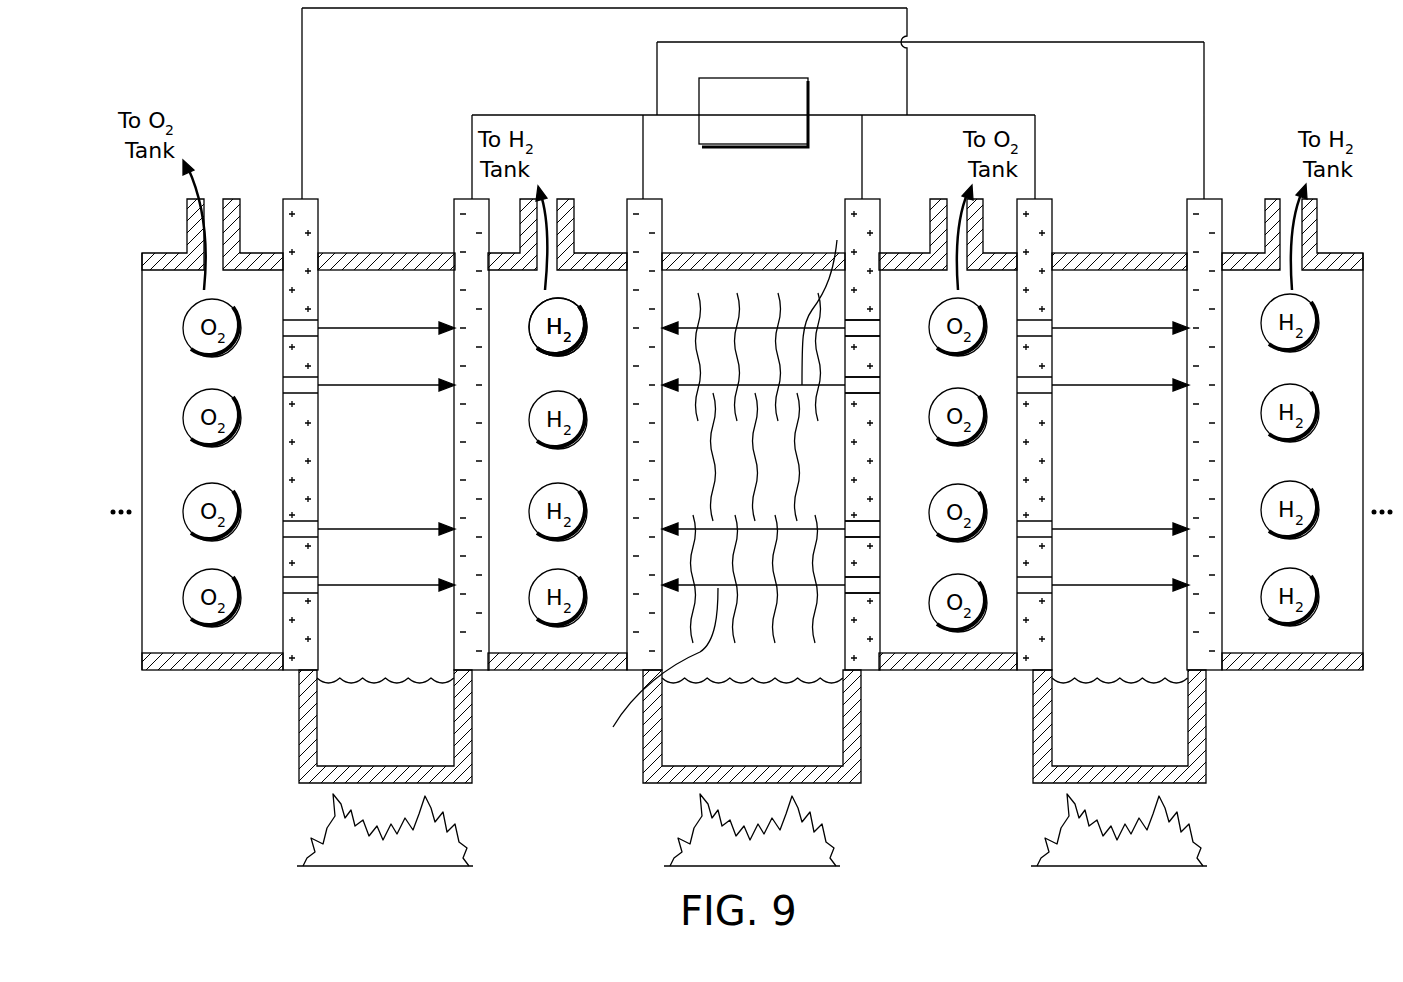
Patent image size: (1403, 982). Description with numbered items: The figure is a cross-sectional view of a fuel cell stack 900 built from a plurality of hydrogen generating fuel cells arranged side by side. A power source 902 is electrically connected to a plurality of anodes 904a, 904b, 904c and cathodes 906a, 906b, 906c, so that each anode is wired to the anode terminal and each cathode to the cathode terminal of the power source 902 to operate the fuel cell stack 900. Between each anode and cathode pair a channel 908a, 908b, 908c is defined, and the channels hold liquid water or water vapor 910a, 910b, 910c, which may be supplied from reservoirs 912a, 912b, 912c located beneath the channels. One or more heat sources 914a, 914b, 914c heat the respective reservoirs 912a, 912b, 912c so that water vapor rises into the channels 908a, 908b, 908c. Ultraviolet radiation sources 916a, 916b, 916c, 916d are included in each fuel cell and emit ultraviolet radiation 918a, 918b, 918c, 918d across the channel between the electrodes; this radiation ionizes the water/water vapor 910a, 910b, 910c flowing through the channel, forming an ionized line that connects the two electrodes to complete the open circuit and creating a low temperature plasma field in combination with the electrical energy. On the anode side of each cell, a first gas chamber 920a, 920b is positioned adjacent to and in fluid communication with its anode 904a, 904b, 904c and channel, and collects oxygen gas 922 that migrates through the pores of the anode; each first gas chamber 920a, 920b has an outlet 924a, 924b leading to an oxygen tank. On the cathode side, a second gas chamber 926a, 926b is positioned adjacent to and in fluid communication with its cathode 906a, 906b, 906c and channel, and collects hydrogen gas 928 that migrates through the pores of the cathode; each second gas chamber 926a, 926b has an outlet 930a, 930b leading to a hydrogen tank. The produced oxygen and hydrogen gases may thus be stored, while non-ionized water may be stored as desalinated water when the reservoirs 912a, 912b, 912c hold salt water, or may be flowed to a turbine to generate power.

The fuel cell stack 900 is at (1297, 62).
The power source 902 is at (755, 148).
The anode 904a is at (879, 235).
The anode 904b is at (318, 208).
The anode 904c is at (1052, 238).
The cathode 906a is at (662, 230).
The cathode 906b is at (455, 235).
The cathode 906c is at (1187, 212).
The channel 908a is at (724, 468).
The channel 908b is at (357, 468).
The channel 908c is at (1090, 468).
The water/water vapor 910a is at (735, 297).
The water/water vapor 910b is at (368, 292).
The water/water vapor 910c is at (1125, 292).
The reservoir 912a is at (723, 742).
The reservoir 912b is at (356, 742).
The reservoir 912c is at (1090, 742).
The heat source 914a is at (815, 820).
The heat source 914b is at (440, 820).
The heat source 914c is at (1175, 820).
The ultraviolet radiation source 916a is at (878, 328).
The ultraviolet radiation source 916b is at (870, 386).
The ultraviolet radiation source 916c is at (870, 528).
The ultraviolet radiation source 916d is at (870, 587).
The ultraviolet radiation 918a is at (700, 297).
The ultraviolet radiation 918b is at (813, 301).
The ultraviolet radiation 918c is at (703, 532).
The ultraviolet radiation 918d is at (636, 675).
The first gas chamber 920a is at (954, 478).
The first gas chamber 920b is at (219, 480).
The oxygen gas 922 is at (930, 430).
The outlet 924a is at (957, 197).
The outlet 924b is at (215, 197).
The second gas chamber 926a is at (494, 478).
The second gas chamber 926b is at (1292, 478).
The hydrogen gas 928 is at (565, 355).
The outlet 930a is at (552, 200).
The outlet 930b is at (1290, 200).